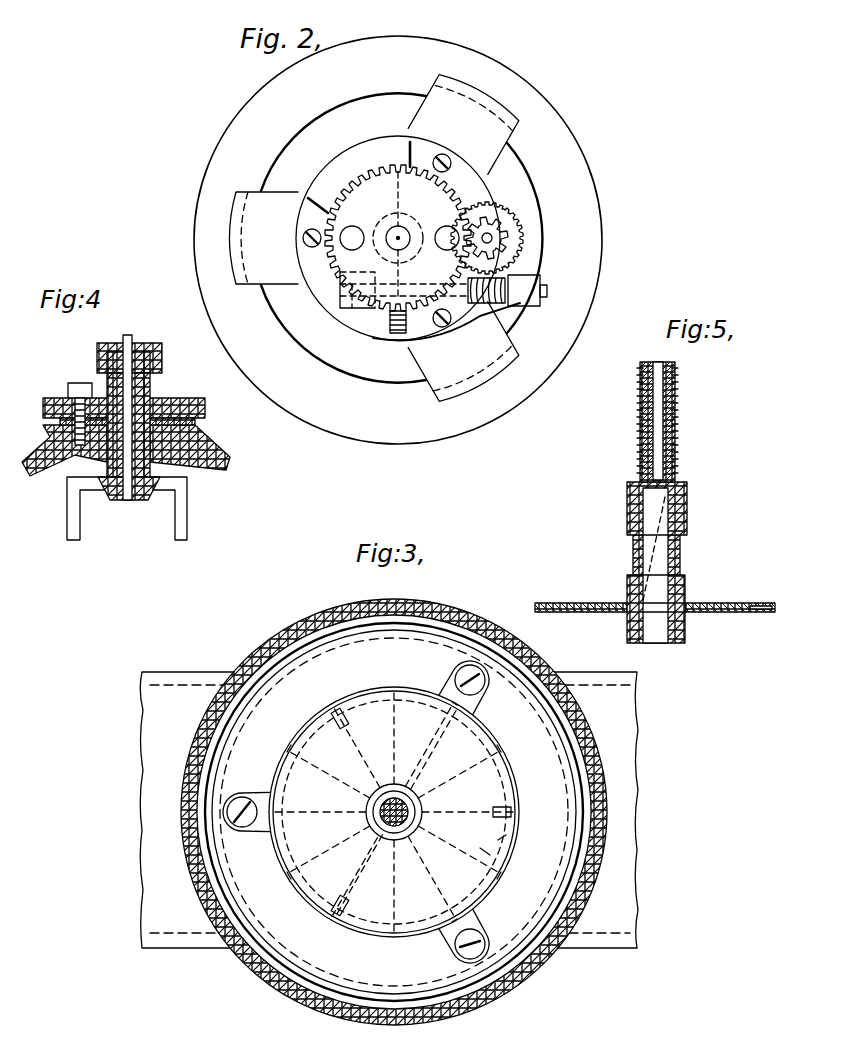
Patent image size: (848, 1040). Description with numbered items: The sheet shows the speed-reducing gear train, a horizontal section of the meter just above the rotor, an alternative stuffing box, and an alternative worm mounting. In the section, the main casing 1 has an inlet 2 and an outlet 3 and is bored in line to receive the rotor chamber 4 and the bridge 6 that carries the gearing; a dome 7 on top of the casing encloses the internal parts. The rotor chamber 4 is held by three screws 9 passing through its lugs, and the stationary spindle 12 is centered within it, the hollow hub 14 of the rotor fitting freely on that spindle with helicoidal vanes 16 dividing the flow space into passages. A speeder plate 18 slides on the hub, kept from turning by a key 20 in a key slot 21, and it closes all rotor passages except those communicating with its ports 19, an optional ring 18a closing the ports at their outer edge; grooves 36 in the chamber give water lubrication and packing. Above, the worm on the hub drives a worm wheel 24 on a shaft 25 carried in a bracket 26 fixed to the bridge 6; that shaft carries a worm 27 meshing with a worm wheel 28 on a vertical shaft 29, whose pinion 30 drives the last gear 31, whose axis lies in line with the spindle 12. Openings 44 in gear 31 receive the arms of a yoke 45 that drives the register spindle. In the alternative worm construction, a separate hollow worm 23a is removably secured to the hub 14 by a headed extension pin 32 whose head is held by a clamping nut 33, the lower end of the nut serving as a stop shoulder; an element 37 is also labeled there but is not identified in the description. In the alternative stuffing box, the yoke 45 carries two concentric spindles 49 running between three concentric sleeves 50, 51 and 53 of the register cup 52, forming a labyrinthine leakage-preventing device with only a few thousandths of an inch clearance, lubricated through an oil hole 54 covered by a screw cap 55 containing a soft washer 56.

In FIG. 3, the main or pressure casing 1 is at (270, 650).
In FIG. 3, the inlet 2 is at (142, 818).
In FIG. 3, the outlet 3 is at (640, 846).
In FIG. 3, the rotor chamber 4 is at (233, 902).
In FIG. 2, the bridge 6 is at (218, 160).
In FIG. 4, the dome 7 is at (227, 459).
In FIG. 3, the screws 9 is at (476, 690).
In FIG. 5, the spindle 12 is at (663, 632).
In FIG. 3, the spindle 12 is at (383, 857).
In FIG. 5, the hub 14 is at (682, 562).
In FIG. 3, the helicoidal vanes 16 is at (356, 758).
In FIG. 5, the speeder plate 18 is at (725, 603).
In FIG. 3, the speeder plate 18 is at (484, 850).
In FIG. 3, the ring 18a is at (502, 842).
In FIG. 5, the ports 19 is at (765, 614).
In FIG. 3, the ports 19 is at (333, 715).
In FIG. 3, the key 20 is at (366, 810).
In FIG. 3, the key slot 21 is at (398, 775).
In FIG. 5, the worm 23a is at (674, 429).
In FIG. 2, the worm wheel 24 is at (389, 328).
In FIG. 2, the shaft 25 is at (343, 286).
In FIG. 2, the bracket 26 is at (320, 176).
In FIG. 2, the worm 27 is at (530, 306).
In FIG. 2, the worm wheel 28 is at (516, 238).
In FIG. 2, the vertical shaft 29 is at (490, 233).
In FIG. 2, the pinion 30 is at (496, 262).
In FIG. 2, the gear 31 is at (372, 187).
In FIG. 5, the headed extension pin 32 is at (676, 458).
In FIG. 5, the clamping nut 33 is at (687, 488).
In FIG. 3, the grooves 36 is at (421, 777).
In FIG. 5, the pin 37 is at (645, 554).
In FIG. 2, the openings 44 is at (366, 220).
In FIG. 4, the yoke 45 is at (182, 487).
In FIG. 4, the concentric spindles 49 is at (175, 438).
In FIG. 4, the sleeve 50 is at (100, 357).
In FIG. 4, the sleeve 51 is at (100, 380).
In FIG. 4, the register cup 52 is at (188, 398).
In FIG. 4, the sleeve 53 is at (108, 377).
In FIG. 4, the oil hole 54 is at (148, 361).
In FIG. 4, the screw cap 55 is at (137, 355).
In FIG. 4, the soft washer 56 is at (130, 342).